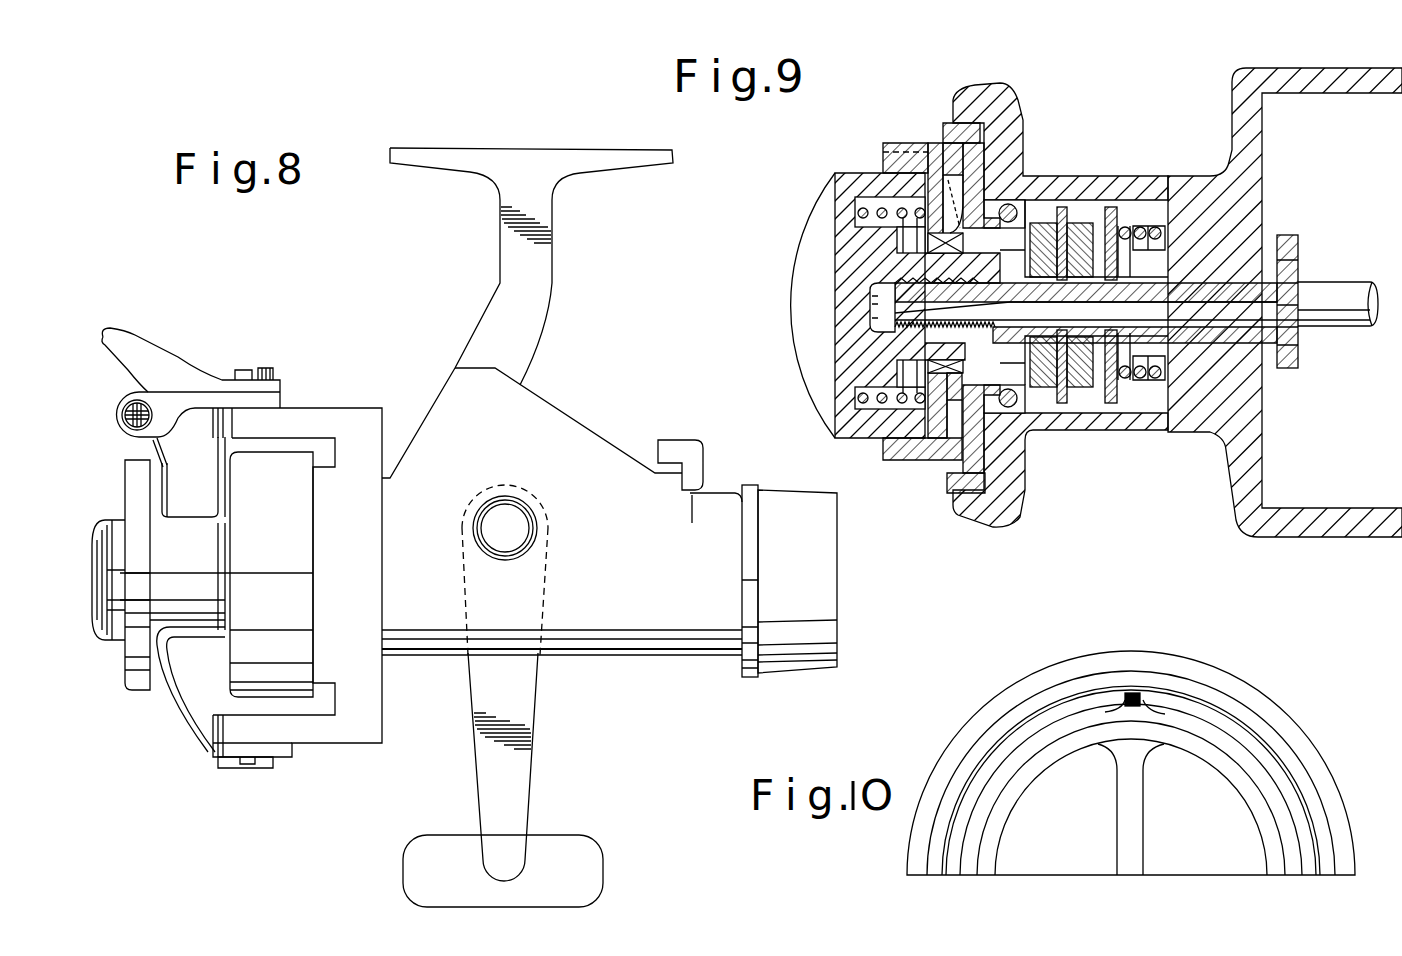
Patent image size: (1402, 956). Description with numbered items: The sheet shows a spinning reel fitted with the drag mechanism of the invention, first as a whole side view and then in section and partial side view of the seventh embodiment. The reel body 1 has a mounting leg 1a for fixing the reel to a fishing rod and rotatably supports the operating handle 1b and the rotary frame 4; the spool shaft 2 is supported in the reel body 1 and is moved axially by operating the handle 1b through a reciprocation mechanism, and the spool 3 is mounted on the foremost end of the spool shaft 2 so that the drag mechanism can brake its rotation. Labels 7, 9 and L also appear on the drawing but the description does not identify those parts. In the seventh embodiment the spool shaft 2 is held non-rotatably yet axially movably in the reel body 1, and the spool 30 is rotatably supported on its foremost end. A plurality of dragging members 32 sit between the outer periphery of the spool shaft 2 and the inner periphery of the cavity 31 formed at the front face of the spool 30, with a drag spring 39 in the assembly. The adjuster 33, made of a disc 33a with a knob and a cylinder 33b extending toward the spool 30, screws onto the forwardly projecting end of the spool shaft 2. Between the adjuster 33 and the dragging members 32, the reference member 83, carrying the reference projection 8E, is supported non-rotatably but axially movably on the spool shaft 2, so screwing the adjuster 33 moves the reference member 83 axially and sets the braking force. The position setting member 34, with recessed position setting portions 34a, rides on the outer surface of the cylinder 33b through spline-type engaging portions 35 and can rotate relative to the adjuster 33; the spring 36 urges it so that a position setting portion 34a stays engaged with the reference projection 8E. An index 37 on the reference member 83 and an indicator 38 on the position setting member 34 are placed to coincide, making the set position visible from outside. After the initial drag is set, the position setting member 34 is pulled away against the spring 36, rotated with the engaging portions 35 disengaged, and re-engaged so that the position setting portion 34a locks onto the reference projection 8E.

In FIG. 8, the reel body 1 is at (543, 397).
In FIG. 8, the mounting leg 1a is at (552, 243).
In FIG. 8, the operating handle 1b is at (535, 725).
In FIG. 9, the spool shaft 2 is at (1210, 287).
In FIG. 8, the spool 3 is at (132, 483).
In FIG. 8, the rotary frame 4 is at (315, 728).
In FIG. 8, the cap 7 is at (783, 503).
In FIG. 8, the ring 9 is at (748, 675).
In FIG. 8, the line roller lever L is at (690, 442).
In FIG. 9, the spool 30 is at (1012, 88).
In FIG. 10, the spool 30 is at (1251, 675).
In FIG. 9, the cavity 31 is at (1125, 220).
In FIG. 9, the dragging members 32 is at (1082, 213).
In FIG. 9, the adjuster 33 is at (824, 324).
In FIG. 10, the adjuster 33 is at (1208, 778).
In FIG. 9, the disc 33a is at (839, 376).
In FIG. 9, the cylinder 33b is at (917, 350).
In FIG. 9, the position setting member 34 is at (928, 183).
In FIG. 10, the position setting member 34 is at (1095, 733).
In FIG. 9, the position setting portions 34a is at (953, 200).
In FIG. 9, the engaging portions 35 is at (930, 247).
In FIG. 9, the spring 36 is at (880, 213).
In FIG. 9, the index 37 is at (945, 117).
In FIG. 10, the index 37 is at (1133, 693).
In FIG. 9, the indicator 38 is at (897, 143).
In FIG. 10, the indicator 38 is at (1143, 712).
In FIG. 9, the drag spring 39 is at (1143, 227).
In FIG. 9, the reference member 83 is at (970, 127).
In FIG. 10, the reference member 83 is at (1108, 712).
In FIG. 9, the reference projection 8E is at (947, 180).